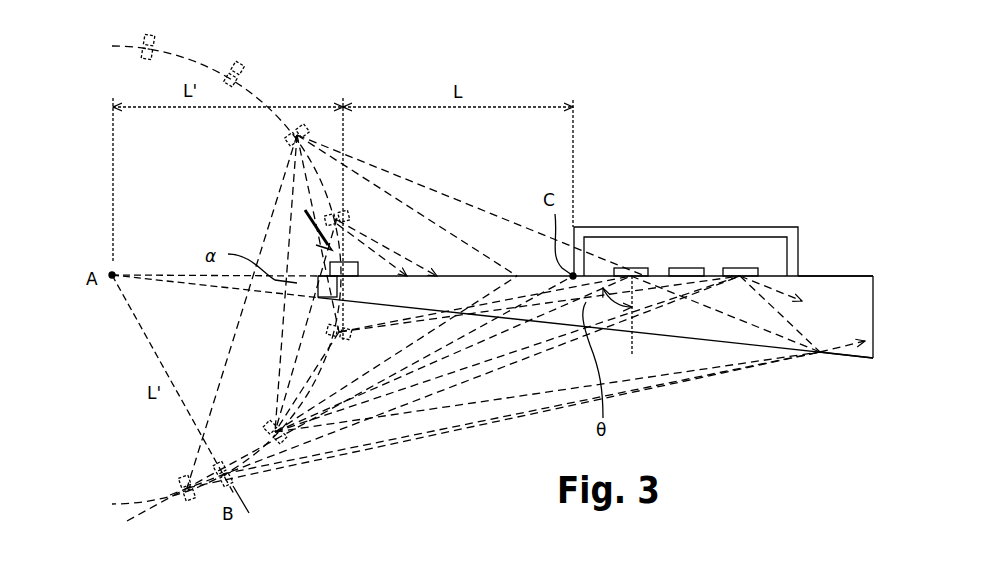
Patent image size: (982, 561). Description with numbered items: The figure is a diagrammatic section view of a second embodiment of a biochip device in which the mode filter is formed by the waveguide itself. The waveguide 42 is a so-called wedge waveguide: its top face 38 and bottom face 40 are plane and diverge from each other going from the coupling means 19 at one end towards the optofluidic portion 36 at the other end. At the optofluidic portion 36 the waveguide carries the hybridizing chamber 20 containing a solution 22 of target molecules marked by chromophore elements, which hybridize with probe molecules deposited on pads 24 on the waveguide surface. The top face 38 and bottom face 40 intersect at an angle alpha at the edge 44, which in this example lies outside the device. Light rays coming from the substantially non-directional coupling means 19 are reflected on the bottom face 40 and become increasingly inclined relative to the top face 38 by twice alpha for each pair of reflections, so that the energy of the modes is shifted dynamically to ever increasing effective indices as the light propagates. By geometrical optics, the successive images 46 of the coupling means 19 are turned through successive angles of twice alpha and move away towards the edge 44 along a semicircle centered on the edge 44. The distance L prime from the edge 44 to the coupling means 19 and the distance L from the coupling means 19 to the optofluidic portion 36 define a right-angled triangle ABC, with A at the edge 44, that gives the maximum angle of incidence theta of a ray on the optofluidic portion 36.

The coupling means 19 is at (357, 273).
The hybridizing chamber 20 is at (727, 227).
The solution 22 is at (685, 237).
The pads 24 is at (632, 268).
The optofluidic portion 36 is at (790, 190).
The top face 38 is at (823, 276).
The bottom face 40 is at (862, 360).
The waveguide 42 is at (863, 292).
The edge 44 is at (112, 275).
The successive images 46 is at (352, 340).